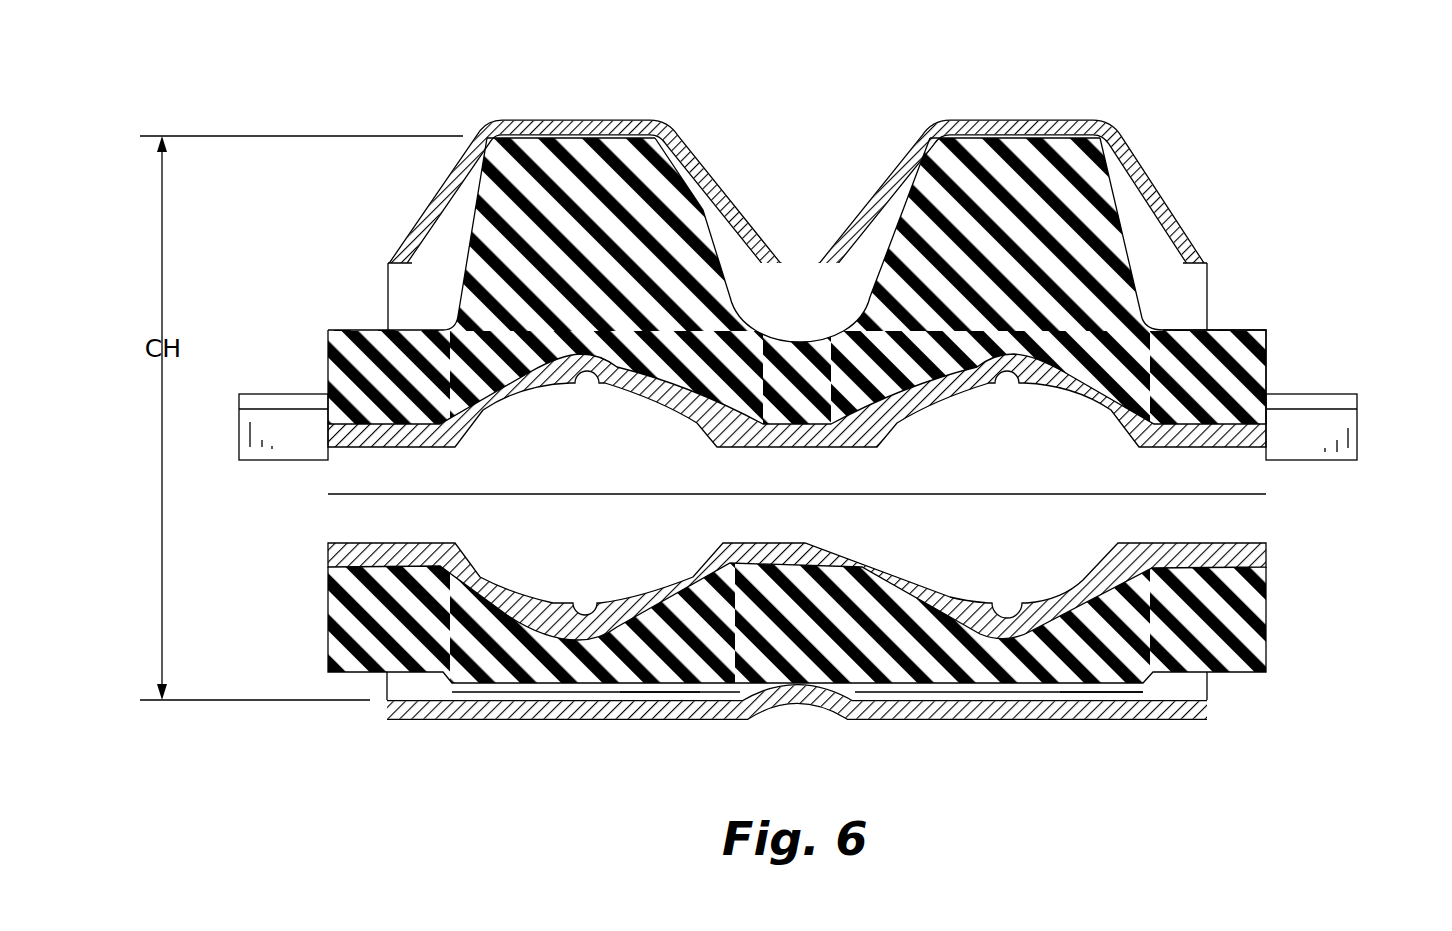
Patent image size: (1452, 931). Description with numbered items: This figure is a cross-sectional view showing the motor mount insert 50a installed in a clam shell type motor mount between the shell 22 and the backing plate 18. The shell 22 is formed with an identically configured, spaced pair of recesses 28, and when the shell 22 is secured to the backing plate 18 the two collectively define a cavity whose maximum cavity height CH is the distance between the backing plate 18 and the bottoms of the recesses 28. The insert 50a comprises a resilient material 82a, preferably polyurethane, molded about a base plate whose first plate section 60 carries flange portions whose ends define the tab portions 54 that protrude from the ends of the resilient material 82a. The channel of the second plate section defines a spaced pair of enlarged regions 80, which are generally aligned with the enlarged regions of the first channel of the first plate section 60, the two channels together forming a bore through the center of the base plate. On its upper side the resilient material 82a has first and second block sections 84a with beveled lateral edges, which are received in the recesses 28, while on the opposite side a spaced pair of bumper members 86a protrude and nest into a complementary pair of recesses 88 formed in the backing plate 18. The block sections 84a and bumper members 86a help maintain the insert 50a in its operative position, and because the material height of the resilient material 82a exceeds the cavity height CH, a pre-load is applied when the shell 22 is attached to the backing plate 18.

The backing plate 18 is at (1037, 710).
The shell 22 is at (1086, 106).
The recesses 28 is at (703, 207).
The motor mount insert 50a is at (1290, 609).
The tab portions 54 is at (244, 448).
The first plate section 60 is at (1253, 553).
The enlarged regions 80 is at (492, 437).
The resilient material 82a is at (1240, 363).
The block sections 84a is at (582, 152).
The bumper members 86a is at (530, 693).
The recesses 88 is at (660, 692).